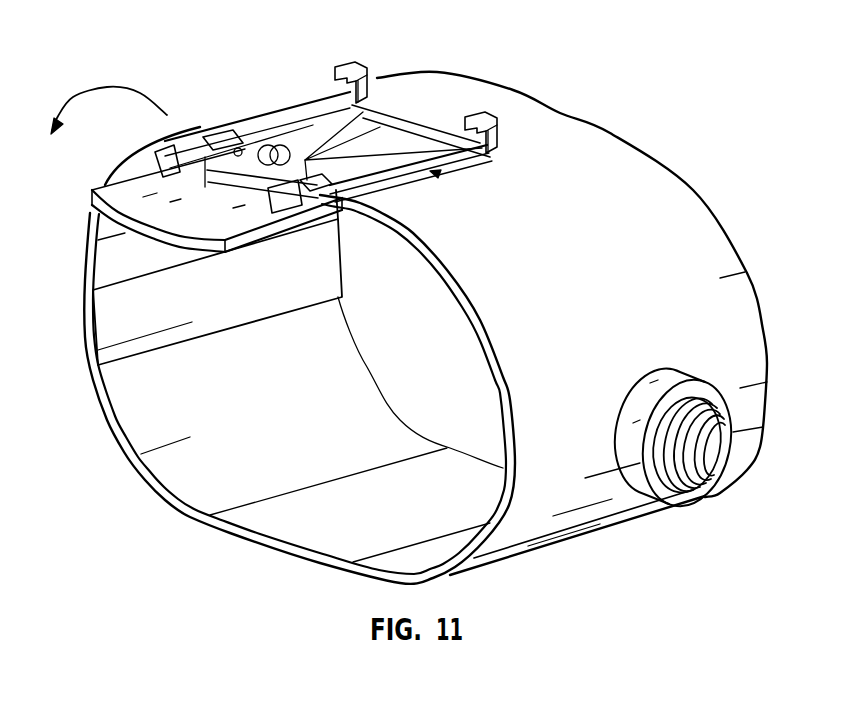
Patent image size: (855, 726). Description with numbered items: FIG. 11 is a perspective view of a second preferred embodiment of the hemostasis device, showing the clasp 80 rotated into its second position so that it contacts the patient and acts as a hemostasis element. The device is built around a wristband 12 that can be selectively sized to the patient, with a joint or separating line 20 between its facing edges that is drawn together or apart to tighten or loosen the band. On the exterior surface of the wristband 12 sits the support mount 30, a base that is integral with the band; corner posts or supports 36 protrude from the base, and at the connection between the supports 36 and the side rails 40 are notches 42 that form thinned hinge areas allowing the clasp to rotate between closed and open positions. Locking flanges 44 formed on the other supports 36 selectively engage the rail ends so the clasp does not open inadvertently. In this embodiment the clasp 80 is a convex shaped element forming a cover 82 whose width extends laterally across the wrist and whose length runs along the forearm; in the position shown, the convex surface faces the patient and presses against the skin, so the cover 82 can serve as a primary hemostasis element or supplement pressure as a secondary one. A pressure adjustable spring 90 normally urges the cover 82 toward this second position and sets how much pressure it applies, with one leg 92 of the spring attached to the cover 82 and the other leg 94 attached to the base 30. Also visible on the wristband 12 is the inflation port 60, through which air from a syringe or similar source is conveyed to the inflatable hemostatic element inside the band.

The wristband 12 is at (277, 461).
The joint or separating line 20 is at (257, 321).
The support mount 30 is at (455, 182).
The corner post or support 36 is at (367, 90).
The side rails 40 is at (156, 150).
The notches 42 is at (214, 140).
The locking flanges 44 is at (347, 66).
The inflation port 60 is at (718, 460).
The clasp 80 is at (120, 249).
The cover 82 is at (110, 197).
The pressure adjustable spring 90 is at (277, 145).
The spring leg 92 is at (205, 187).
The spring leg 94 is at (307, 180).